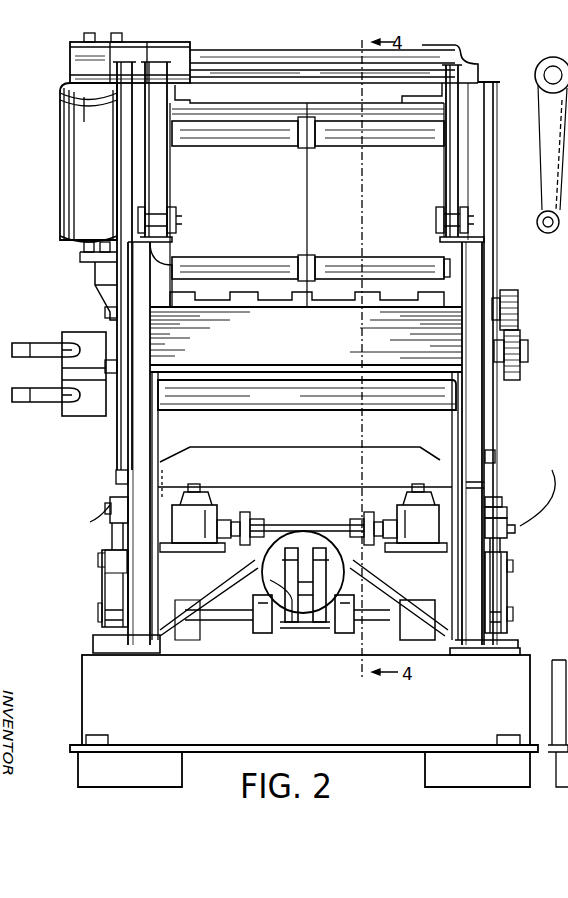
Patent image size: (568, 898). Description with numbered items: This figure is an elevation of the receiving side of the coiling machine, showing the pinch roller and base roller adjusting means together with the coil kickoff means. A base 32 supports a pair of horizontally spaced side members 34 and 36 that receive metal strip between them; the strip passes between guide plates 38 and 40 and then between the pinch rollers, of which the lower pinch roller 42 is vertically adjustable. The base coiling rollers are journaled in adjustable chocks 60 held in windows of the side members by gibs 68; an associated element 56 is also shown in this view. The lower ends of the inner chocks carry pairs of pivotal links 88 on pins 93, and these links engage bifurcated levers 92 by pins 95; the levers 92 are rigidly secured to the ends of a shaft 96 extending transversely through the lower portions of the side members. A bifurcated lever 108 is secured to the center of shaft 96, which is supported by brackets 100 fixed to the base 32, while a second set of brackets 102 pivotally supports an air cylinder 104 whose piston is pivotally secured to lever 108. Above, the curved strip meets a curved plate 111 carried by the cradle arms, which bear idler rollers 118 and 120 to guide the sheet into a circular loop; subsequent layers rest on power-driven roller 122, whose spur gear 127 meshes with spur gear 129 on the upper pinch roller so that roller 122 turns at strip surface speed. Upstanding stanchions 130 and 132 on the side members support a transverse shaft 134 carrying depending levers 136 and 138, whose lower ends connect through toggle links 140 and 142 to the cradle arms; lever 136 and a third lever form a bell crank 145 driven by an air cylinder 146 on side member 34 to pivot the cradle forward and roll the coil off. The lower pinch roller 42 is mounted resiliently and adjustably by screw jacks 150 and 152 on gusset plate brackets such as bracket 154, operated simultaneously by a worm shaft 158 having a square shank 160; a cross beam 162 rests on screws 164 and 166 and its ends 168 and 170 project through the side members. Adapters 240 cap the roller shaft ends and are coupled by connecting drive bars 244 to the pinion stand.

The base 32 is at (86, 670).
The side member 34 is at (135, 458).
The side member 36 is at (472, 465).
The guide plate 38 is at (255, 400).
The guide plate 40 is at (306, 342).
The lower pinch roller 42 is at (307, 398).
The right inclined brace 56 is at (410, 600).
The chock 60 is at (495, 460).
The gib 68 is at (90, 522).
The pivotal link 88 is at (112, 540).
The bifurcated lever 92 is at (102, 583).
The pin 93 is at (104, 508).
The pin 95 is at (98, 565).
The shaft 96 is at (97, 622).
The bracket 100 is at (340, 624).
The bracket 102 is at (240, 640).
The air cylinder 104 is at (250, 553).
The bifurcated lever 108 is at (268, 636).
The curved plate 111 is at (238, 205).
The idler roller 118 is at (226, 147).
The idler roller 120 is at (374, 264).
The roller 122 is at (372, 306).
The spur gear 127 is at (508, 292).
The spur gear 129 is at (510, 378).
The stanchion 130 is at (160, 236).
The stanchion 132 is at (488, 166).
The transverse shaft 134 is at (312, 63).
The lever 136 is at (169, 178).
The lever 138 is at (444, 184).
The toggle link 140 is at (180, 218).
The toggle link 142 is at (436, 221).
The bell crank 145 is at (540, 58).
The air cylinder 146 is at (74, 166).
The screw jack 150 is at (214, 506).
The screw jack 152 is at (404, 506).
The gusset plate bracket 154 is at (190, 604).
The worm shaft 158 is at (280, 524).
The square shank 160 is at (512, 527).
The cross beam 162 is at (308, 460).
The screw 164 is at (196, 484).
The screw 166 is at (416, 484).
The cross beam end 168 is at (116, 482).
The cross beam end 170 is at (490, 486).
The adapter 240 is at (64, 384).
The connecting drive bar 244 is at (44, 344).